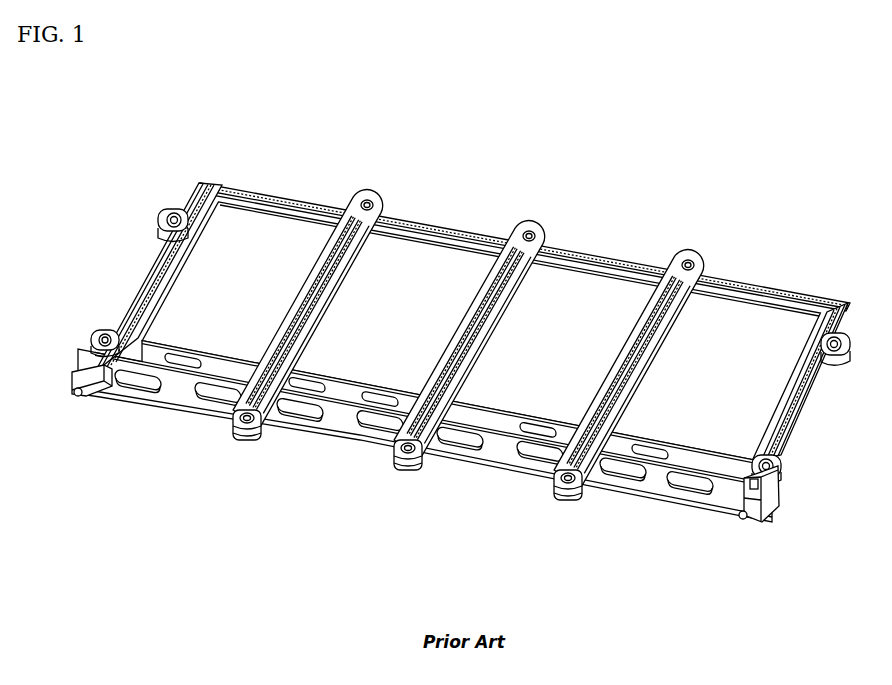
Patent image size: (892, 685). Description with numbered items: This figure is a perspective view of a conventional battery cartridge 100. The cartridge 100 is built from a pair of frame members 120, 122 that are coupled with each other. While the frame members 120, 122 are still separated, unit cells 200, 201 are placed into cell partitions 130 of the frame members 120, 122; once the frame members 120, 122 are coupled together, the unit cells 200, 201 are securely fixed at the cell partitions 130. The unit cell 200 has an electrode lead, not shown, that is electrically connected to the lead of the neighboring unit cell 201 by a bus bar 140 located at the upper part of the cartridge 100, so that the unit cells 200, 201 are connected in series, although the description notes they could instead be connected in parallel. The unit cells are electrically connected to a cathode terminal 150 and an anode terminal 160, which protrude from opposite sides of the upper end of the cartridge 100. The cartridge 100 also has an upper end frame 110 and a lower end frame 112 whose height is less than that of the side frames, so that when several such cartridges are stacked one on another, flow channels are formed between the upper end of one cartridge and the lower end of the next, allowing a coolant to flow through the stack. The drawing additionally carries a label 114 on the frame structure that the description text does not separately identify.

The cartridge 100 is at (191, 154).
The upper end frame 110 is at (657, 478).
The lower end frame 112 is at (292, 200).
The support bar 114 is at (497, 267).
The frame member 120 is at (393, 457).
The frame member 122 is at (422, 468).
The cell partitions 130 is at (567, 262).
The bus bar 140 is at (287, 410).
The cathode terminal 150 is at (738, 518).
The anode terminal 160 is at (77, 397).
The unit cell 200 is at (773, 290).
The unit cell 201 is at (613, 290).